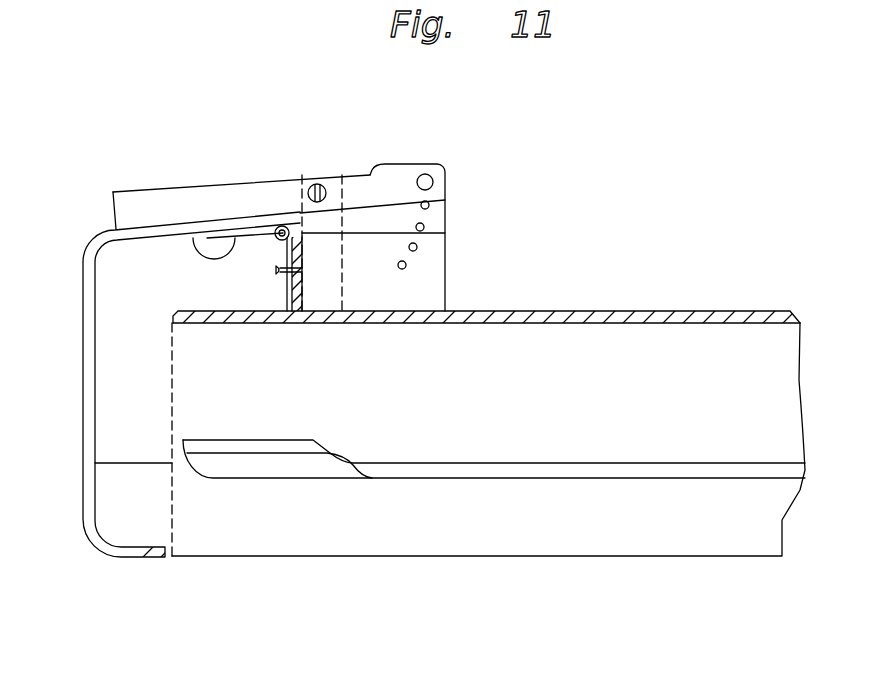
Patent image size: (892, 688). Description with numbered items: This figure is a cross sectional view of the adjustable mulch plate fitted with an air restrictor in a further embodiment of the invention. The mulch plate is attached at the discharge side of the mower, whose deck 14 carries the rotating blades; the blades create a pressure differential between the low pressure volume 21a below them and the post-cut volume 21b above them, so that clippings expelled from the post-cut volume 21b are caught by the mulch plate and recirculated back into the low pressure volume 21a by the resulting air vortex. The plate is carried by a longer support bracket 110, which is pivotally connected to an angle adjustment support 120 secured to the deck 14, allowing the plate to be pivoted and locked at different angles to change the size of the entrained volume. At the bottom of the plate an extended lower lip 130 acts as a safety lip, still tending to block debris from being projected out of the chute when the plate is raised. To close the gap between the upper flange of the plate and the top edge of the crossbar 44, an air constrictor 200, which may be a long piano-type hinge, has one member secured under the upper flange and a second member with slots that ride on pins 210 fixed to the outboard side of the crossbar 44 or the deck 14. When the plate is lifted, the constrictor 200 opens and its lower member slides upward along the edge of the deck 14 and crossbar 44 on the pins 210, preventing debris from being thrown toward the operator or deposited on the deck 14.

The deck 14 is at (575, 311).
The low pressure volume 21a is at (668, 533).
The post-cut volume 21b is at (665, 413).
The crossbar 44 is at (320, 297).
The support bracket 110 is at (148, 206).
The angle adjustment support 120 is at (423, 283).
The extended lower lip 130 is at (127, 558).
The air constrictor 200 is at (211, 210).
The pins 210 is at (264, 230).